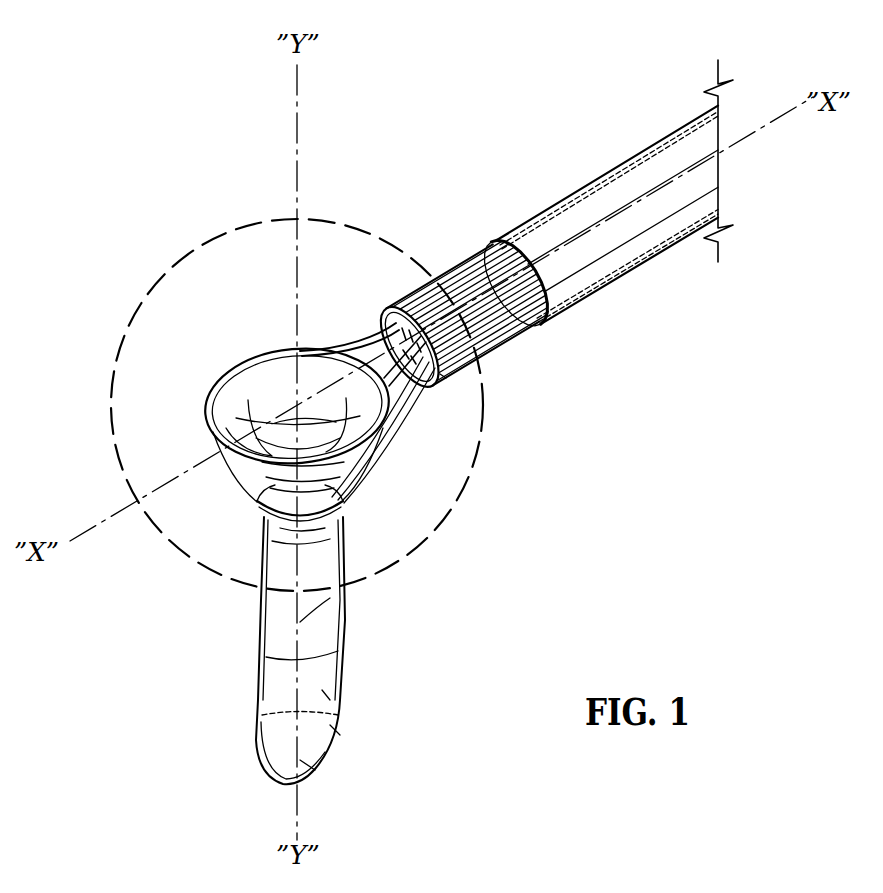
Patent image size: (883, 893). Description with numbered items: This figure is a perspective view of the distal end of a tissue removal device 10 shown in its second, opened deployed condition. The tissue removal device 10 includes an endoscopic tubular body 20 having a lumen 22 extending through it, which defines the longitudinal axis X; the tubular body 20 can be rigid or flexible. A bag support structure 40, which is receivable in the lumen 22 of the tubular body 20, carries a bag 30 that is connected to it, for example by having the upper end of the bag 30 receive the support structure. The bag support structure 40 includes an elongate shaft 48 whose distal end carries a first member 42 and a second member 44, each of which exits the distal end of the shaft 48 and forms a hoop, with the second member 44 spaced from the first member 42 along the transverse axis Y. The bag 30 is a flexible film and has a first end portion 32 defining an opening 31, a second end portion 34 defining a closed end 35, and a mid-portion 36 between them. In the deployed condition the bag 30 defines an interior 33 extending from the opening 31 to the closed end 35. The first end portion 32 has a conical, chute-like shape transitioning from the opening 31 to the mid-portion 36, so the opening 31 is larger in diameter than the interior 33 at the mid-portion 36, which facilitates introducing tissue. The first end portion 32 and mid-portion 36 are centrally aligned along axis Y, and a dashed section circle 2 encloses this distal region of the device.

The section line circle 2 is at (348, 224).
The tissue removal device 10 is at (499, 77).
The tubular body 20 is at (617, 163).
The lumen 22 is at (457, 240).
The bag 30 is at (343, 648).
The opening 31 is at (237, 408).
The first end portion 32 is at (253, 484).
The interior 33 is at (317, 630).
The second end portion 34 is at (307, 757).
The closed end 35 is at (337, 733).
The mid-portion 36 is at (323, 697).
The bag support structure 40 is at (375, 291).
The first member 42 is at (268, 562).
The second member 44 is at (250, 356).
The elongate shaft 48 is at (453, 368).